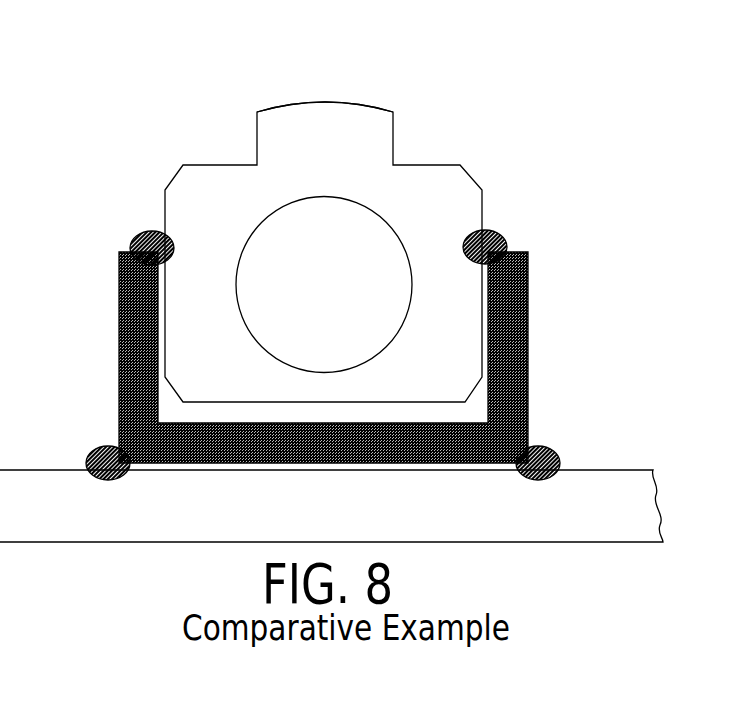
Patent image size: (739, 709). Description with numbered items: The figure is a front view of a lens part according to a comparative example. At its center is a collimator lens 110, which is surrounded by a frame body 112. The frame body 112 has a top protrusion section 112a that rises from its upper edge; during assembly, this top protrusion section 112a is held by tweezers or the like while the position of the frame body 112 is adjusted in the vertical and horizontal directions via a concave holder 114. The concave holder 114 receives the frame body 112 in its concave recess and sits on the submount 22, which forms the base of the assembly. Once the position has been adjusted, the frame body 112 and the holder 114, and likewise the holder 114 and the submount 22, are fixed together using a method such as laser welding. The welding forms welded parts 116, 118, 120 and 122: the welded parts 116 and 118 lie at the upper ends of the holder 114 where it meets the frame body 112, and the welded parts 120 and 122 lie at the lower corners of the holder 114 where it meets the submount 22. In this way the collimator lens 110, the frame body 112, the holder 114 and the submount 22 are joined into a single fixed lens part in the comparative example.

The submount 22 is at (627, 470).
The collimator lens 110 is at (383, 220).
The frame body 112 is at (463, 173).
The top protrusion section 112a is at (322, 111).
The concave holder 114 is at (528, 337).
The welded part 116 is at (522, 217).
The welded part 118 is at (140, 232).
The welded part 120 is at (538, 447).
The welded part 122 is at (100, 447).